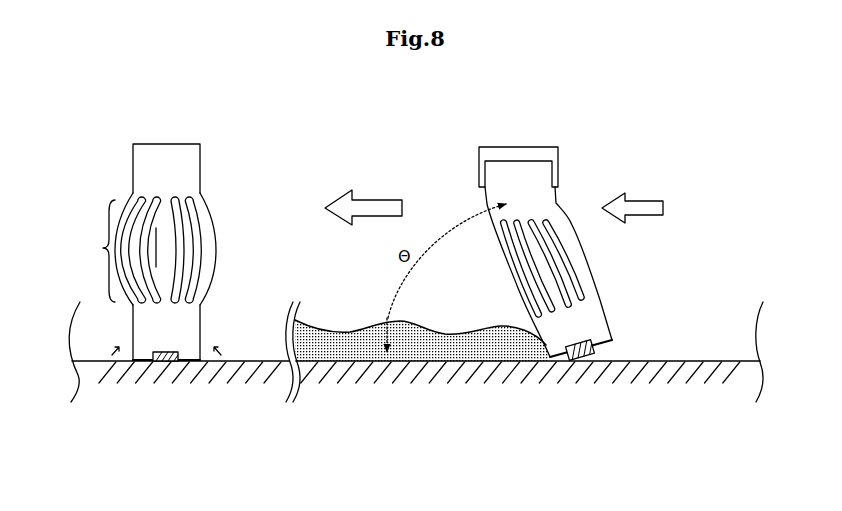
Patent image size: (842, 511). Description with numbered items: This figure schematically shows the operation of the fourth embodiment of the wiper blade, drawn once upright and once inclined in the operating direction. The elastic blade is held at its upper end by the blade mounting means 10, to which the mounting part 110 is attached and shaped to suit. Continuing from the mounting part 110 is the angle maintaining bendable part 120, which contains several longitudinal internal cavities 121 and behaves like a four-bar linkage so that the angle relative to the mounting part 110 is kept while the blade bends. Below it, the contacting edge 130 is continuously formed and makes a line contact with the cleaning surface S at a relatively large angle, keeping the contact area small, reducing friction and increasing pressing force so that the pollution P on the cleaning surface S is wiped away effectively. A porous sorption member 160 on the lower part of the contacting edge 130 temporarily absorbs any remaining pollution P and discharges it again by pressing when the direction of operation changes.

The blade mounting means 10 is at (540, 153).
The mounting part 110 is at (535, 183).
The angle maintaining bendable part 120 is at (193, 168).
The longitudinal internal cavity 121 is at (203, 249).
The contacting edge 130 is at (188, 340).
The porous sorption member 160 is at (162, 362).
The pollution P is at (319, 326).
The cleaning surface S is at (462, 363).